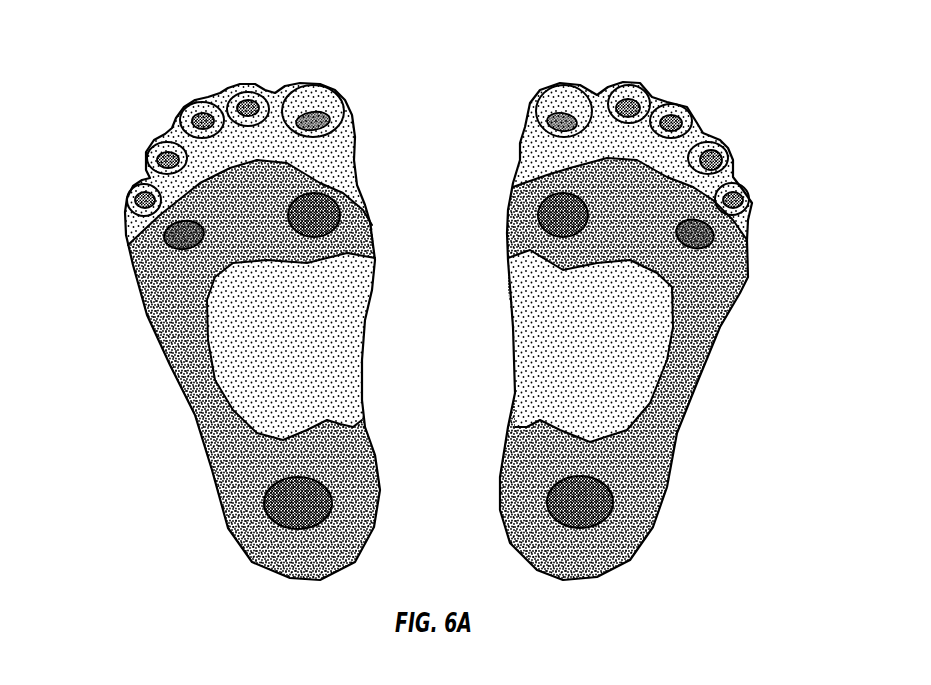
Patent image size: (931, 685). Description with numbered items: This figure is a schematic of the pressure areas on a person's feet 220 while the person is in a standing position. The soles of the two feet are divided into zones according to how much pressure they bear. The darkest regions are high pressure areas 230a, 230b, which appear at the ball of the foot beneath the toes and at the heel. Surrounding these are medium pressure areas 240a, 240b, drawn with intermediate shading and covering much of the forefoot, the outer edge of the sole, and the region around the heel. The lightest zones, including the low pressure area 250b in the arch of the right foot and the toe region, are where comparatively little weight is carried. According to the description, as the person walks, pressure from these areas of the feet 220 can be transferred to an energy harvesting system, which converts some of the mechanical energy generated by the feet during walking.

The feet 220 is at (732, 91).
The high pressure area 230a is at (318, 212).
The high pressure area 230b is at (173, 229).
The medium pressure area 240a is at (197, 393).
The medium pressure area 240b is at (693, 333).
The low pressure area 250b is at (540, 388).